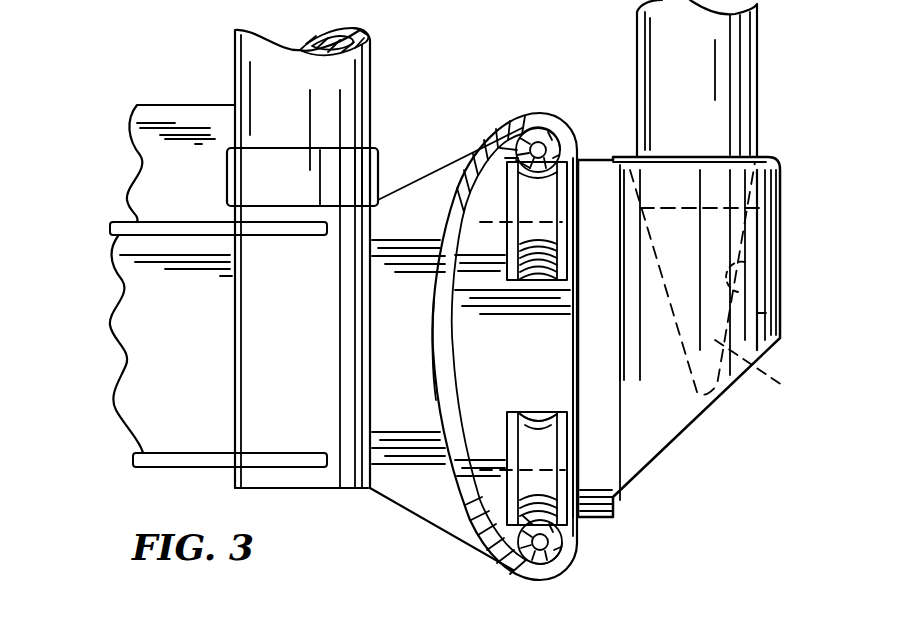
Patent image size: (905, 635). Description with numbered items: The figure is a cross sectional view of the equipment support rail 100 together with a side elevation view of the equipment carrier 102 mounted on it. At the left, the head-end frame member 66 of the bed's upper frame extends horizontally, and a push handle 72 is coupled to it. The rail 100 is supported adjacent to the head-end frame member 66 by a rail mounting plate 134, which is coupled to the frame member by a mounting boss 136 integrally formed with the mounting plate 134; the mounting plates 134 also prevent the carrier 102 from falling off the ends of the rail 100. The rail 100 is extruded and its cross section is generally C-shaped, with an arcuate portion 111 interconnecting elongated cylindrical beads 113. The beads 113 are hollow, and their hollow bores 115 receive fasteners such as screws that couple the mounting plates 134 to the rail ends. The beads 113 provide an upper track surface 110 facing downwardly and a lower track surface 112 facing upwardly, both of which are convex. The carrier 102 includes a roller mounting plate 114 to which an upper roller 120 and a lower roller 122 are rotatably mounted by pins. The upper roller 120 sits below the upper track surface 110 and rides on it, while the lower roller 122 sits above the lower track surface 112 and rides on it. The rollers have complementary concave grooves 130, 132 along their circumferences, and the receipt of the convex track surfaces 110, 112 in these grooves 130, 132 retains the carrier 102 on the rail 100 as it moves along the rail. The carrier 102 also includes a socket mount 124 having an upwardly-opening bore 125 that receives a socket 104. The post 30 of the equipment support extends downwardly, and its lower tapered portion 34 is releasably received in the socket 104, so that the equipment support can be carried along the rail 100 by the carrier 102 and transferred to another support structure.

The post 30 is at (733, 123).
The lower tapered portion 34 is at (761, 376).
The head-end frame member 66 is at (168, 160).
The push handles 72 is at (352, 76).
The equipment support rail 100 is at (442, 363).
The equipment carrier 102 is at (795, 178).
The socket 104 is at (762, 241).
The upper track surface 110 is at (537, 177).
The arcuate portion 111 is at (433, 312).
The lower track surface 112 is at (527, 513).
The cylindrical beads 113 is at (538, 125).
The roller mounting plate 114 is at (598, 440).
The hollow bores 115 is at (517, 140).
The upper rollers 120 is at (503, 243).
The lower rollers 122 is at (507, 425).
The socket mount 124 is at (757, 313).
The upwardly-opening bore 125 is at (727, 262).
The concave groove 130 is at (540, 278).
The concave groove 132 is at (533, 417).
The rail mounting plates 134 is at (422, 188).
The mounting bosses 136 is at (252, 385).